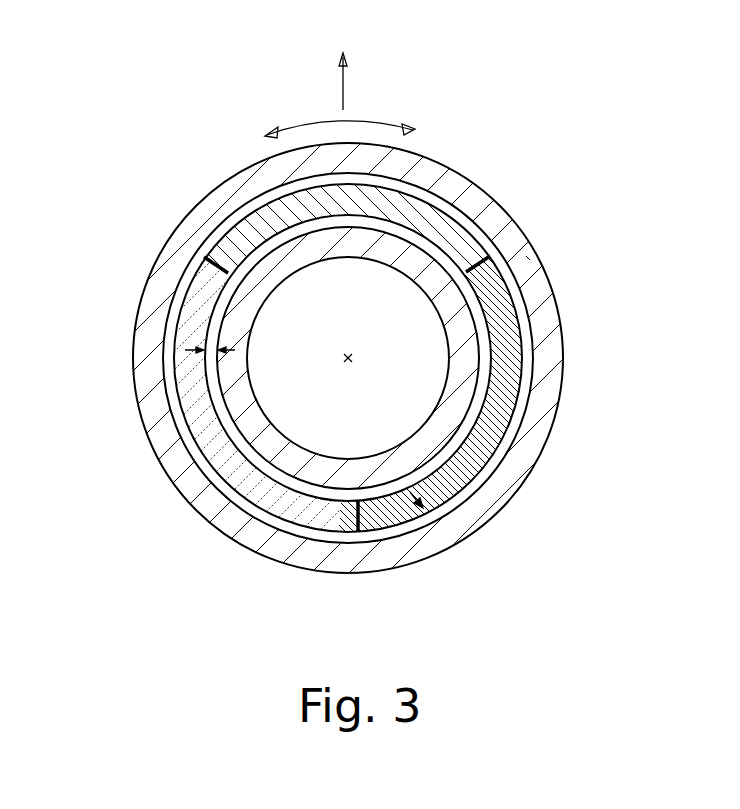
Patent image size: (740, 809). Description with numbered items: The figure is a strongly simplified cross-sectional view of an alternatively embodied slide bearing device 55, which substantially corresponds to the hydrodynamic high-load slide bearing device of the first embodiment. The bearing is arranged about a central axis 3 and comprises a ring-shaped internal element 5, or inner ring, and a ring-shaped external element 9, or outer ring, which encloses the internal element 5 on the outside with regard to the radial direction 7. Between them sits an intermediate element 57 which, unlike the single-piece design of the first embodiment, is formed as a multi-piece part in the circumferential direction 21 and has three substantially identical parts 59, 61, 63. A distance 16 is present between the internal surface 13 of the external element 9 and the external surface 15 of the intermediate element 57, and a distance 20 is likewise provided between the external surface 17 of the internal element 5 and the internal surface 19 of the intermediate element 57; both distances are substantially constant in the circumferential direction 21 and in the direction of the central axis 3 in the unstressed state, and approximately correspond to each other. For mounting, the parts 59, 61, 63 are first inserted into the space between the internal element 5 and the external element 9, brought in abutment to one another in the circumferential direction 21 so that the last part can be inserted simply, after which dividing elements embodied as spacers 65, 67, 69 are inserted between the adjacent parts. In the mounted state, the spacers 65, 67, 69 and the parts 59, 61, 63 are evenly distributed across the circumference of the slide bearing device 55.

The central axis 3 is at (352, 358).
The internal element 5 is at (458, 412).
The radial direction 7 is at (347, 84).
The external element 9 is at (515, 477).
The internal surface 13 is at (423, 197).
The external surface 15 is at (253, 205).
The distance 16 is at (435, 524).
The external surface 17 is at (237, 467).
The internal surface 19 is at (282, 473).
The distance 20 is at (185, 350).
The circumferential direction 21 is at (388, 124).
The slide bearing device 55 is at (145, 156).
The intermediate element 57 is at (485, 232).
The part of intermediate element 59 is at (443, 213).
The part of intermediate element 61 is at (193, 308).
The part of intermediate element 63 is at (512, 357).
The spacer 65 is at (528, 258).
The spacer 67 is at (220, 265).
The spacer 69 is at (357, 523).